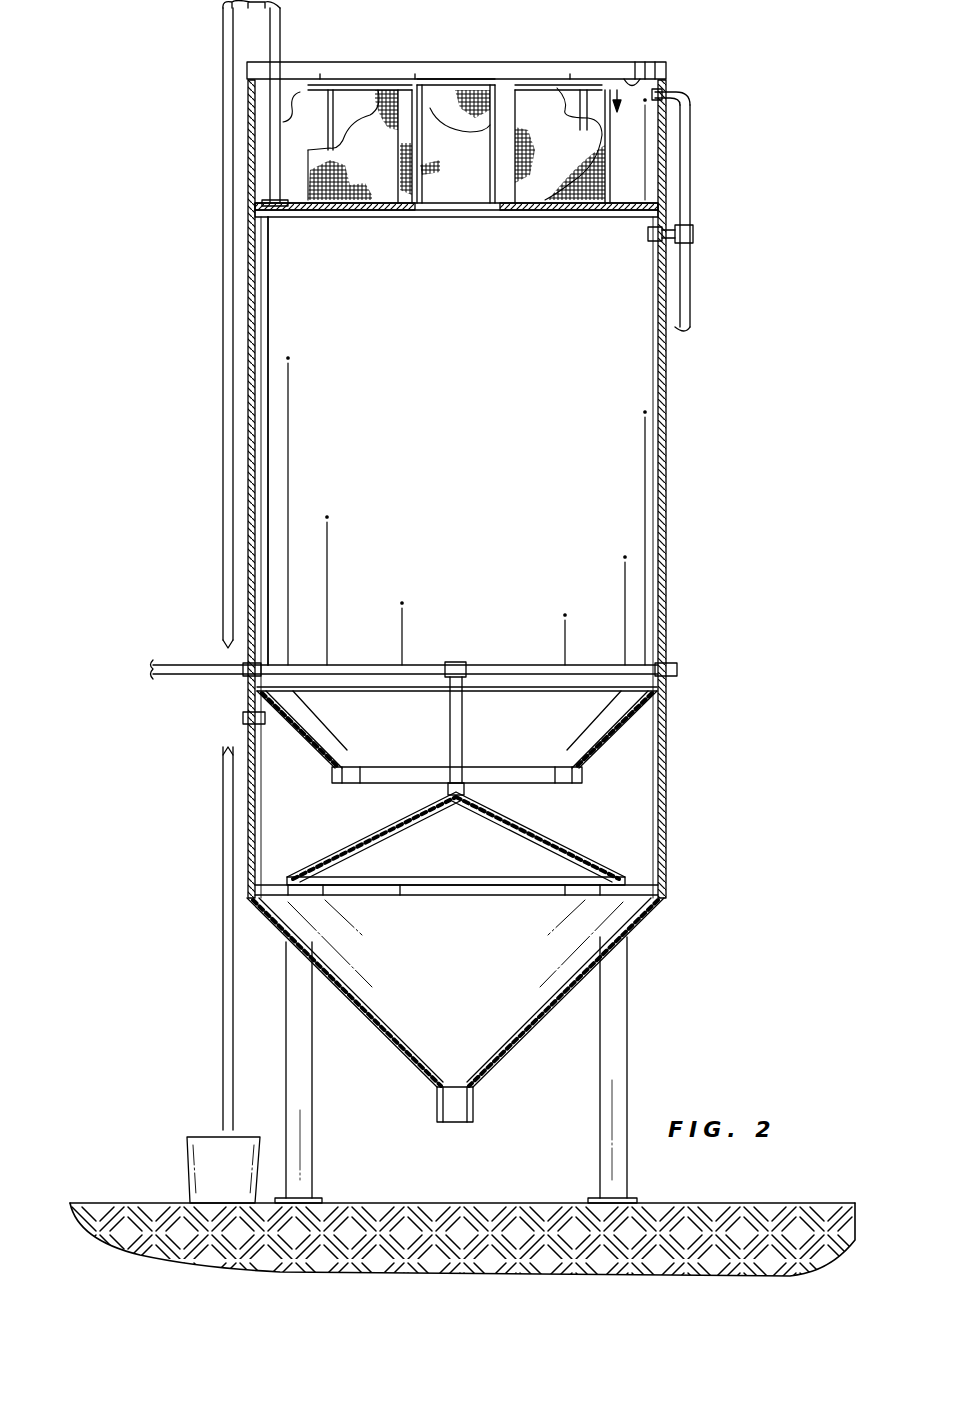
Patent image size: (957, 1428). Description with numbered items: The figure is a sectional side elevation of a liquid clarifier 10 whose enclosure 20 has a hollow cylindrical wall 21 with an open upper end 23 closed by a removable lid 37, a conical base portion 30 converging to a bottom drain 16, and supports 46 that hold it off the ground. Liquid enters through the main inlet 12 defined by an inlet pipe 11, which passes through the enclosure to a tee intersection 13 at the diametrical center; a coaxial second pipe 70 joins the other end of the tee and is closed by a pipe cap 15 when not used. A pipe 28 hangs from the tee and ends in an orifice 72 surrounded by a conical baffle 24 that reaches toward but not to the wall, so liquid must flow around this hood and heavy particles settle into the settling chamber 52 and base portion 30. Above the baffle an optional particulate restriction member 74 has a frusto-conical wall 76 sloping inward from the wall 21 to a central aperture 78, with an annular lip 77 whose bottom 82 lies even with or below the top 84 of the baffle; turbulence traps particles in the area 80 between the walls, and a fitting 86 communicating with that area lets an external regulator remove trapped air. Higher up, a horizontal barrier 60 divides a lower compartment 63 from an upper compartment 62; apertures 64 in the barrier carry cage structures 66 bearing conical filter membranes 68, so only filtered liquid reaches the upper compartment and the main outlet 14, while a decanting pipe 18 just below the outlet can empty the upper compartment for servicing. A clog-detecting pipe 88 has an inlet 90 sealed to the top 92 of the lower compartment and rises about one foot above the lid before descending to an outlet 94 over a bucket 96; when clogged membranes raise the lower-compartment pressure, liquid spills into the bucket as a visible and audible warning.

The clarifier 10 is at (190, 62).
The inlet pipe 11 is at (360, 662).
The main inlet 12 is at (225, 665).
The tee intersection 13 is at (453, 660).
The main outlet 14 is at (668, 90).
The pipe cap 15 is at (680, 668).
The drain 16 is at (455, 1122).
The decanting pipe 18 is at (652, 238).
The enclosure 20 is at (672, 470).
The wall 21 is at (258, 342).
The open upper end 23 is at (640, 62).
The baffle 24 is at (560, 825).
The pipe 28 is at (450, 740).
The conical base portion 30 is at (535, 1040).
The removable lid 37 is at (448, 60).
The supports 46 is at (300, 1030).
The settling chamber 52 is at (456, 972).
The horizontal barrier 60 is at (632, 220).
The upper compartment 62 is at (617, 88).
The lower compartment 63 is at (588, 383).
The apertures 64 is at (385, 177).
The cage structures 66 is at (500, 120).
The filter membranes 68 is at (442, 183).
The second pipe 70 is at (533, 662).
The orifice 72 is at (456, 800).
The particulate restriction member 74 is at (618, 747).
The frusto-conical wall 76 is at (275, 750).
The annular lip 77 is at (320, 775).
The central aperture 78 is at (537, 794).
The area 80 is at (295, 760).
The bottom 82 is at (380, 765).
The top 84 is at (480, 780).
The fitting 86 is at (243, 716).
The pipe 88 is at (278, 90).
The inlet 90 is at (268, 222).
The top of the lower compartment 92 is at (538, 177).
The outlet 94 is at (218, 1125).
The bucket 96 is at (187, 1170).